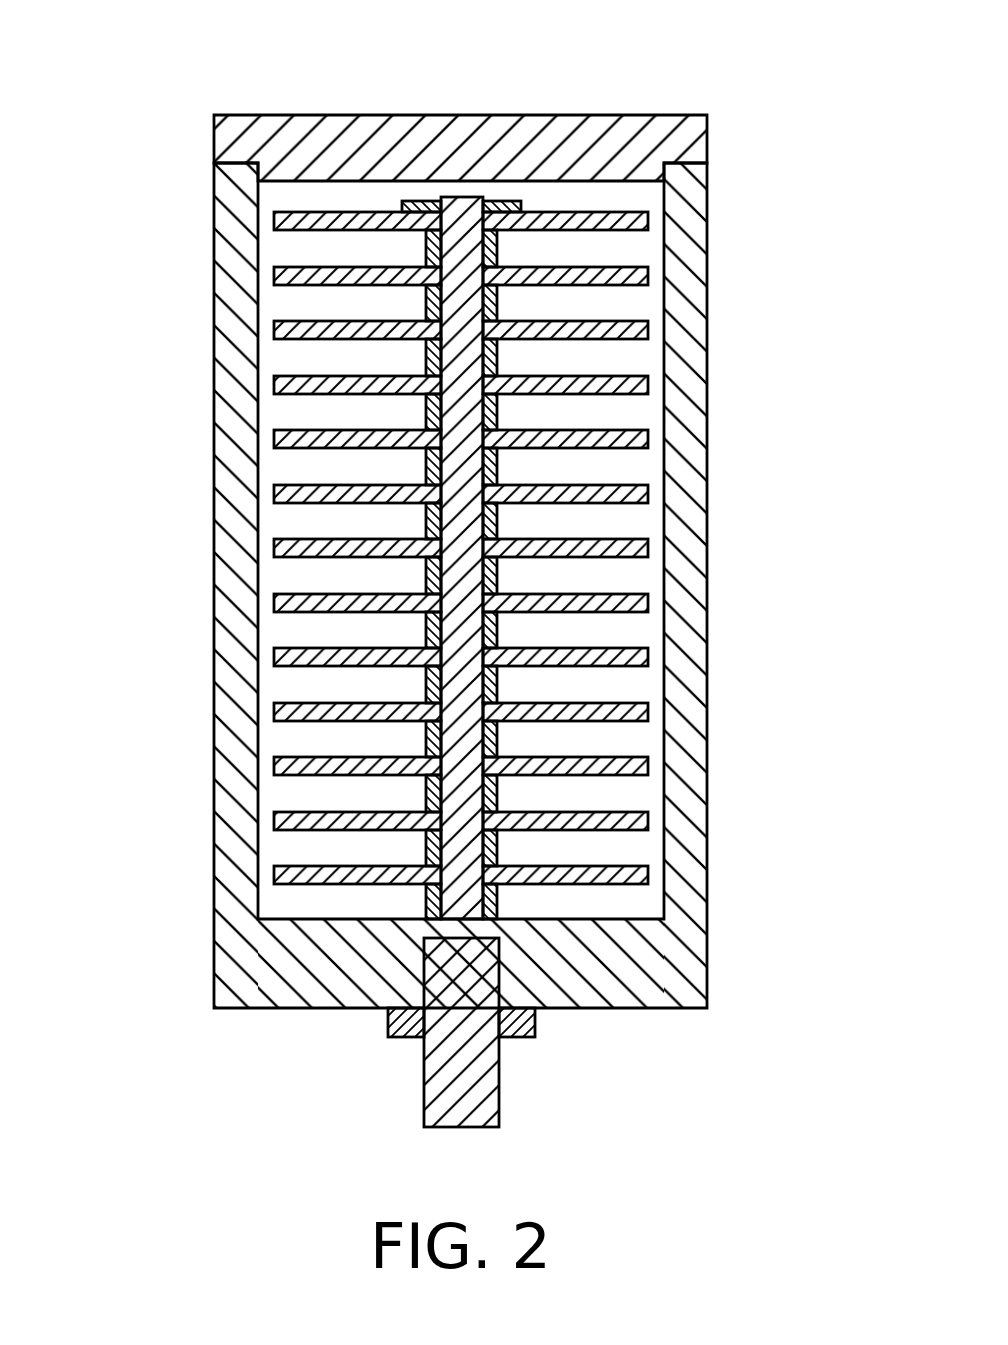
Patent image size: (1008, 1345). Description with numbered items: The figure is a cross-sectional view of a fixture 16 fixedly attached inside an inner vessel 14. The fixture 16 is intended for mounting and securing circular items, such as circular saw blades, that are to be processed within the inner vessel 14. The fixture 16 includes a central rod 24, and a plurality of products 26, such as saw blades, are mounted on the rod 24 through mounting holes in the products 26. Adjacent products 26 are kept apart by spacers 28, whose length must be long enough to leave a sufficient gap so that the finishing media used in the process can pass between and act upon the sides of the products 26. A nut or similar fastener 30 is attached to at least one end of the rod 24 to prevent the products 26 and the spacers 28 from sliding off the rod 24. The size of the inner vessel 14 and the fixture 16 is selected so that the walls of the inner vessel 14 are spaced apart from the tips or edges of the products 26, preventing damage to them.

The inner vessel 14 is at (684, 527).
The fixture 16 is at (470, 198).
The central rod 24 is at (453, 920).
The products 26 is at (636, 284).
The spacers 28 is at (500, 410).
The nut or similar fastener 30 is at (418, 200).